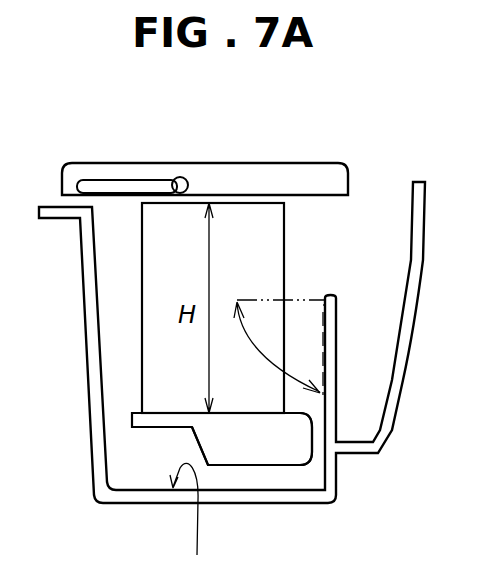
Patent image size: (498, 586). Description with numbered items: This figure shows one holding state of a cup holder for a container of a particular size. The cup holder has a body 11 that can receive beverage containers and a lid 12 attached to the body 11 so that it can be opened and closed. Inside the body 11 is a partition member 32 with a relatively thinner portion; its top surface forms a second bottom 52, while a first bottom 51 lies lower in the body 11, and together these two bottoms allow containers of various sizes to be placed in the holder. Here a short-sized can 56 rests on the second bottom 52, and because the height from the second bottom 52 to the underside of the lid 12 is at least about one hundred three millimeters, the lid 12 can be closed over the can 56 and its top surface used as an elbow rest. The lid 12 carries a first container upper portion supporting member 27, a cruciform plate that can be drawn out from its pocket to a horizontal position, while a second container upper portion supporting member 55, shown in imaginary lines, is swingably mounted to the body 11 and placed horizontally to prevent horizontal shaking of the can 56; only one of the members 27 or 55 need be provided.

The body 11 is at (148, 503).
The lid 12 is at (243, 170).
The first container upper portion supporting member 27 is at (132, 190).
The partition member 32 is at (262, 453).
The first bottom 51 is at (197, 524).
The second bottom 52 is at (169, 402).
The second container upper portion supporting member 55 is at (303, 297).
The short-sized can 56 is at (143, 290).